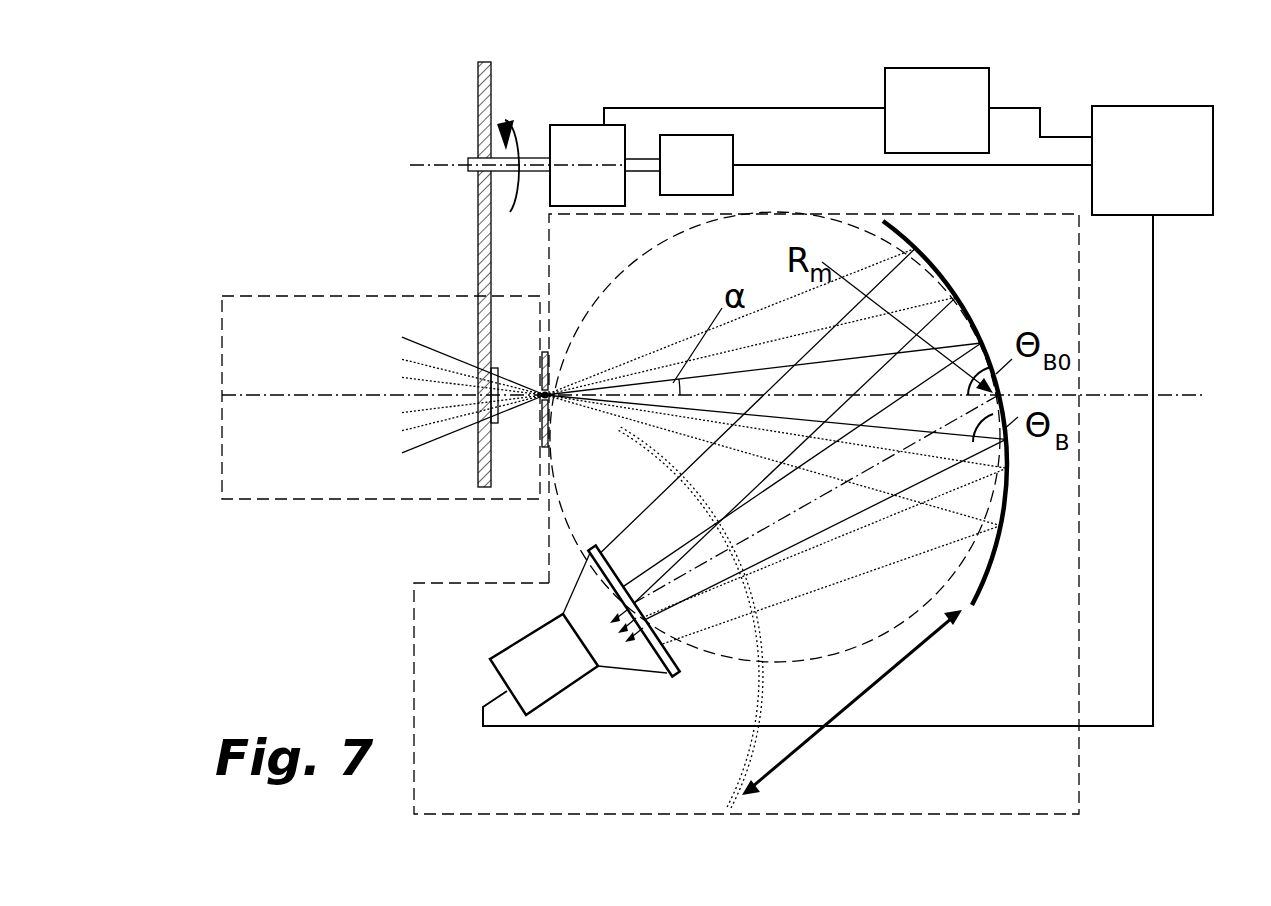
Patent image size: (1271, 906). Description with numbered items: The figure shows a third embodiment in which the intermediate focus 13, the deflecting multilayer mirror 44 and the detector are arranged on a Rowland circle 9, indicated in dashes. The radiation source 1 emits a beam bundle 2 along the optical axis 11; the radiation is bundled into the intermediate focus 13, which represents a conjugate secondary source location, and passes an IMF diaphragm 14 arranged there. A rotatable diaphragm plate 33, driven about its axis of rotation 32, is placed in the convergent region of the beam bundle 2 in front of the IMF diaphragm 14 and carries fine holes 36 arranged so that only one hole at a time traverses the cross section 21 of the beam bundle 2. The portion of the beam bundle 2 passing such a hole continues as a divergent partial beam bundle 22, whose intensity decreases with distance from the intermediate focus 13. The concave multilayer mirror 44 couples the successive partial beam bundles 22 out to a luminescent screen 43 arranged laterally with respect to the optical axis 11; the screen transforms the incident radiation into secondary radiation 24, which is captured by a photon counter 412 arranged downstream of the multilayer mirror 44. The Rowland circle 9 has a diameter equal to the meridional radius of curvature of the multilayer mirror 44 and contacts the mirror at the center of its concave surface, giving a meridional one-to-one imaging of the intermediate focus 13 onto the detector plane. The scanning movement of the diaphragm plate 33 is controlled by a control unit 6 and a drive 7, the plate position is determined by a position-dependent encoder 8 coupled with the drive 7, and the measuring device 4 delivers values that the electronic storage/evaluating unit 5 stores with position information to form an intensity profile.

The radiation source 1 is at (305, 295).
The beam bundle 2 is at (439, 437).
The measuring device 4 is at (1080, 498).
The electronic storage/evaluating unit 5 is at (1173, 195).
The control unit 6 is at (897, 98).
The drive 7 is at (580, 152).
The position-dependent encoder 8 is at (705, 150).
The Rowland circle 9 is at (887, 633).
The optical axis 11 is at (305, 400).
The intermediate focus 13 is at (549, 391).
The IMF diaphragm 14 is at (540, 405).
The cross section 21 is at (548, 386).
The partial beam bundle 22 is at (707, 541).
The secondary radiation 24 is at (606, 607).
The axis of rotation 32 is at (432, 162).
The diaphragm plate 33 is at (480, 140).
The fine hole 36 is at (476, 379).
The luminescent screen 43 is at (668, 665).
The multilayer mirror 44 is at (967, 310).
The photon counter 412 is at (557, 662).